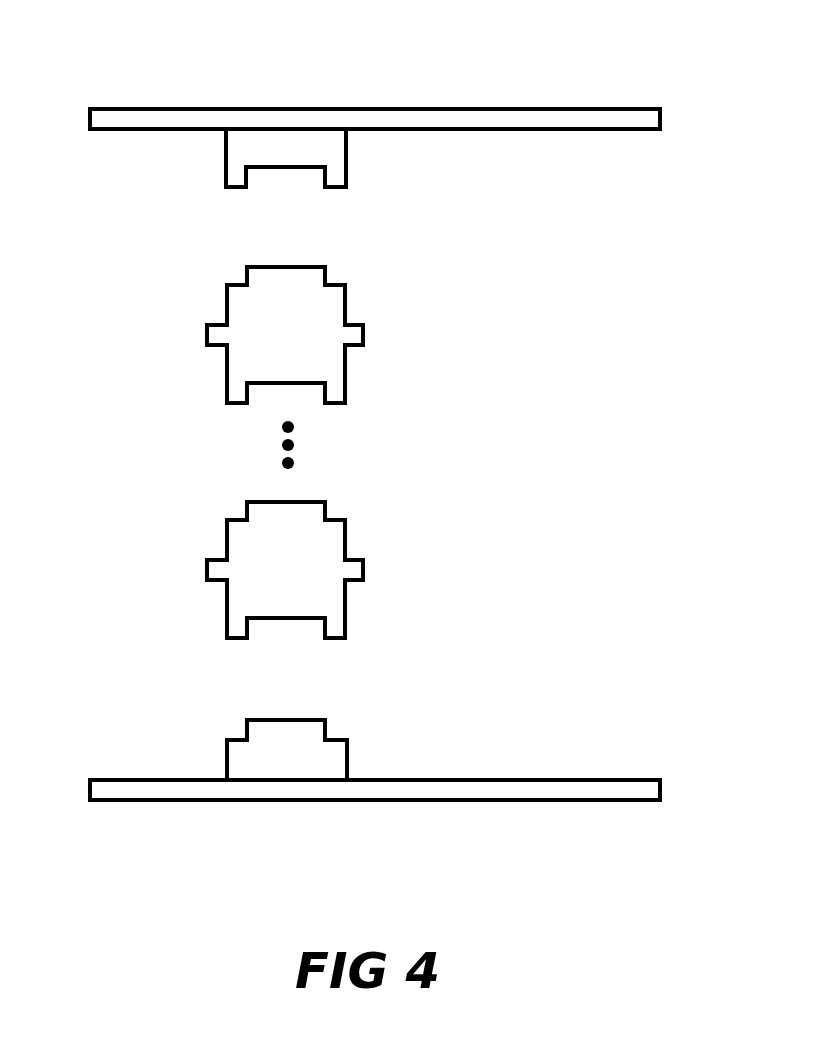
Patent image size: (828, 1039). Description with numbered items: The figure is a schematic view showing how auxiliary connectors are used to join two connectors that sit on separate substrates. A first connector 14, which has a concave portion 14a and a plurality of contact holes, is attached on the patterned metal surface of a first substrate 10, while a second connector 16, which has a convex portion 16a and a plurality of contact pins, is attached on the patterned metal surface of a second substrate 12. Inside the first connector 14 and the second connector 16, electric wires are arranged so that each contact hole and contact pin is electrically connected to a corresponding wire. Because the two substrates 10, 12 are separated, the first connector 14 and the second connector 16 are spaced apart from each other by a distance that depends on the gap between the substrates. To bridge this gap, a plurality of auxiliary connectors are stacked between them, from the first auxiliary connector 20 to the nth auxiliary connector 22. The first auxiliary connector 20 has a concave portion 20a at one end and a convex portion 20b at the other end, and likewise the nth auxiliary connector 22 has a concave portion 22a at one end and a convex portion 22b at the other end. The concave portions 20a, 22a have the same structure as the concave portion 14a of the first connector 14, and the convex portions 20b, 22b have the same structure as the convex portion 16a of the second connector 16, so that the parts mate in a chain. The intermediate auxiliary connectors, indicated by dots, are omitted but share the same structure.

The first substrate 10 is at (482, 110).
The second substrate 12 is at (290, 800).
The first connector 14 is at (210, 179).
The concave portion 14a is at (292, 168).
The second connector 16 is at (381, 717).
The convex portion 16a is at (272, 720).
The first auxiliary connector 20 is at (396, 544).
The concave portion 20a is at (260, 502).
The convex portion 20b is at (282, 621).
The nth auxiliary connector 22 is at (387, 302).
The concave portion 22a is at (312, 266).
The convex portion 22b is at (295, 385).